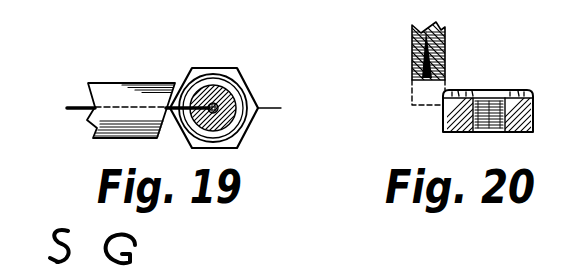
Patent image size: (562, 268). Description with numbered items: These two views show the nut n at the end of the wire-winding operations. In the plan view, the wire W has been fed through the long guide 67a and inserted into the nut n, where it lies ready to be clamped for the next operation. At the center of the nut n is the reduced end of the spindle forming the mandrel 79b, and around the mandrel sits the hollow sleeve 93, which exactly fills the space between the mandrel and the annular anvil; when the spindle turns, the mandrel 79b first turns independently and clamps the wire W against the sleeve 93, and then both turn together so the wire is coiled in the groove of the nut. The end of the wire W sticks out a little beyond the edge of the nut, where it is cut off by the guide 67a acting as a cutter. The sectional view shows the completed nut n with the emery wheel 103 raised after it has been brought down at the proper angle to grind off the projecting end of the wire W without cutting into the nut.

In FIG. 19, the wire W is at (72, 106).
In FIG. 20, the wire W is at (499, 97).
In FIG. 19, the guide 67a is at (147, 82).
In FIG. 19, the nut n is at (229, 74).
In FIG. 20, the nut n is at (528, 92).
In FIG. 19, the mandrel 79b is at (236, 95).
In FIG. 19, the hollow sleeve 93 is at (246, 126).
In FIG. 20, the emery wheel 103 is at (441, 35).